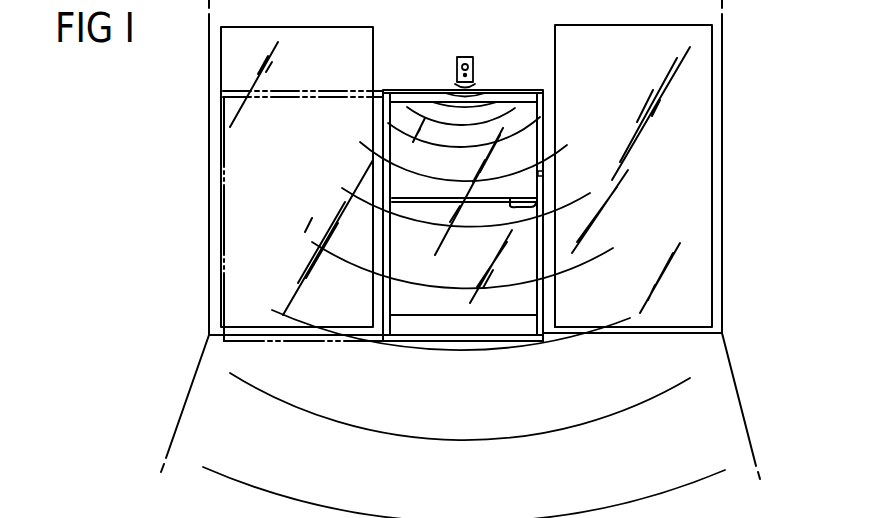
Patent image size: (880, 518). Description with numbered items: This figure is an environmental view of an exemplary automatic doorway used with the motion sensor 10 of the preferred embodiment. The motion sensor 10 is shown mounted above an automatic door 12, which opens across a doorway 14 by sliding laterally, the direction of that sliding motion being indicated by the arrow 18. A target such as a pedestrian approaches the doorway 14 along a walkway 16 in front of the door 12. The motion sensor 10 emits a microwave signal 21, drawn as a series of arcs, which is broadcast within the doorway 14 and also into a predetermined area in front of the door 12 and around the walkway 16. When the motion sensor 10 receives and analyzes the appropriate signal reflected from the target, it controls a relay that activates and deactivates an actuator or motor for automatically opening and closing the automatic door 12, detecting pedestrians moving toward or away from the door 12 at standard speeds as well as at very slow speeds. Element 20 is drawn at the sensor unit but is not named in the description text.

The motion sensor 10 is at (512, 170).
The automatic door 12 is at (532, 142).
The doorway 14 is at (560, 302).
The walkway 16 is at (524, 378).
The arrow 18 is at (412, 73).
The sensor unit 20 is at (474, 68).
The microwave signal 21 is at (345, 425).